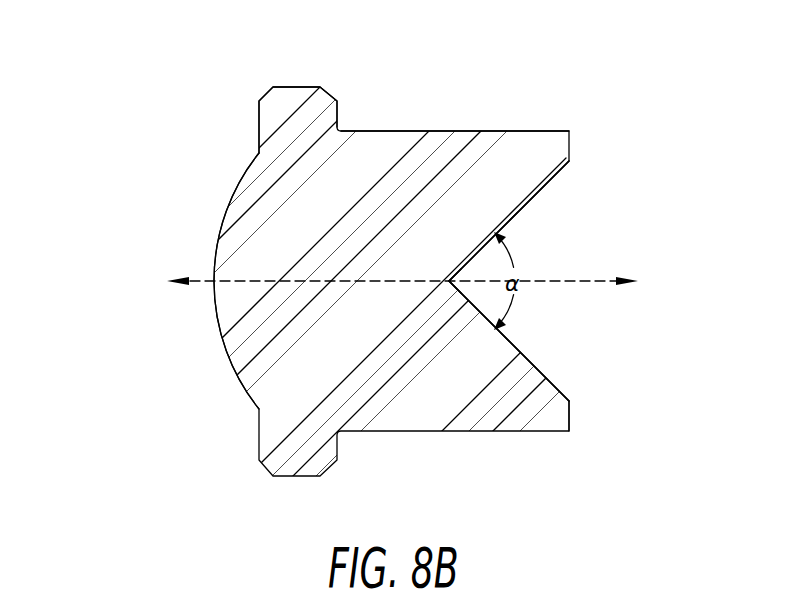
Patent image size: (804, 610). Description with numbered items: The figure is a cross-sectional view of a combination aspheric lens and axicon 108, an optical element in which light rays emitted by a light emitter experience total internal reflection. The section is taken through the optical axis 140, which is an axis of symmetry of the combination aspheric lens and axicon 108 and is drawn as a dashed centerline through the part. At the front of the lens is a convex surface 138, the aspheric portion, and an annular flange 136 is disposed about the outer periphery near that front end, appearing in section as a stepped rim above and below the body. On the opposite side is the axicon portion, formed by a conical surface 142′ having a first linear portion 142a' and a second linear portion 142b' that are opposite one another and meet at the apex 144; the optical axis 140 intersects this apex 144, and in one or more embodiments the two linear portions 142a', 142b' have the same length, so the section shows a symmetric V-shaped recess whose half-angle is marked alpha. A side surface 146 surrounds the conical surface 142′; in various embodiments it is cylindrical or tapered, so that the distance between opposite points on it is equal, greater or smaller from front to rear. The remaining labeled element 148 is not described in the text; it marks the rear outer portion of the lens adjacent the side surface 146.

The combination aspheric lens and axicon 108 is at (601, 96).
The annular flange 136 is at (268, 114).
The convex surface 138 is at (232, 199).
The optical axis 140 is at (178, 278).
The conical surface 142′ is at (552, 188).
The first linear portion 142a' is at (525, 221).
The second linear portion 142b' is at (533, 341).
The apex 144 is at (449, 283).
The side surface 146 is at (479, 131).
The side surface 148 is at (570, 416).